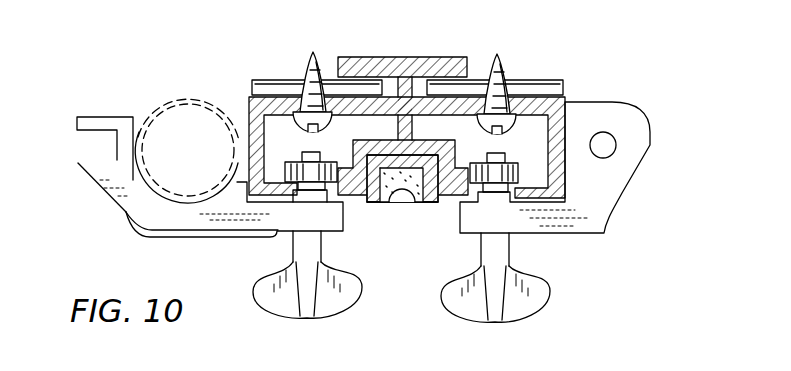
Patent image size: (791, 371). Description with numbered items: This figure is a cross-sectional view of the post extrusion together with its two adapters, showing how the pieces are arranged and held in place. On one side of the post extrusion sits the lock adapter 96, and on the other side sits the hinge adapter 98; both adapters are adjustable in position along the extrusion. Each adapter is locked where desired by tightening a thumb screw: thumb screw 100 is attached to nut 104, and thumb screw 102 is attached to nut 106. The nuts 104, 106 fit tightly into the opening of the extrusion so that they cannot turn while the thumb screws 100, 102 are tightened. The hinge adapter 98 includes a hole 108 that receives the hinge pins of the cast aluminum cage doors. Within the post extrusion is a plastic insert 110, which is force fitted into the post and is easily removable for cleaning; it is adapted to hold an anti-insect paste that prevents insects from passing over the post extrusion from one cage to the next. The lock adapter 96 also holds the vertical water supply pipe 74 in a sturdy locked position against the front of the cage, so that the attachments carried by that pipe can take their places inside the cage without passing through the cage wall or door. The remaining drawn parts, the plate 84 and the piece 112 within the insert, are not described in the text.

The vertical water supply pipe 74 is at (208, 100).
The plate 84 is at (553, 96).
The lock adapter 96 is at (168, 238).
The hinge adapter 98 is at (627, 191).
The thumb screw 100 is at (270, 314).
The thumb screw 102 is at (522, 320).
The nut 104 is at (288, 172).
The nut 106 is at (530, 160).
The hole 108 is at (594, 152).
The plastic insert 110 is at (424, 197).
The insert 112 is at (402, 199).